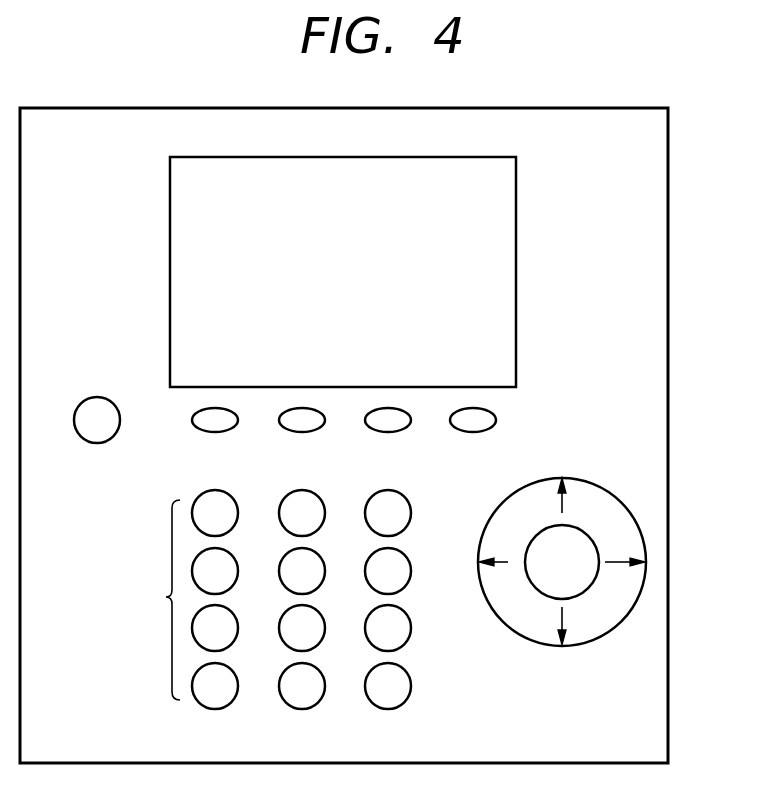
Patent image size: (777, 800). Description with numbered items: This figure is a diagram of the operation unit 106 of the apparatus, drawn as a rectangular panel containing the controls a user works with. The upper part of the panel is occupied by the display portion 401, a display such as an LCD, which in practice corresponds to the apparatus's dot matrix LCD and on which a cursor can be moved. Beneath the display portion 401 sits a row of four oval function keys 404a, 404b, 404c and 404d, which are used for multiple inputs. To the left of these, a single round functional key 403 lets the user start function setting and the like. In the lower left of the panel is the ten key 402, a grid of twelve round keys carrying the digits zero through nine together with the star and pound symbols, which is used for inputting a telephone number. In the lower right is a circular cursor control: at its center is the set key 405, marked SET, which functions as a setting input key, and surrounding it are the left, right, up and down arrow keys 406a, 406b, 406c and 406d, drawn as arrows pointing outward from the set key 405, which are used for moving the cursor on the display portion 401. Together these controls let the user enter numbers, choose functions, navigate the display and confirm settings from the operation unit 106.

The operation unit 106 is at (668, 302).
The display portion 401 is at (516, 265).
The ten key 402 is at (165, 597).
The functional key 403 is at (97, 397).
The function key 404a is at (228, 431).
The function key 404b is at (315, 431).
The function key 404c is at (400, 431).
The function key 404d is at (495, 424).
The set key 405 is at (593, 535).
The arrow key 406a is at (560, 508).
The arrow key 406b is at (617, 560).
The arrow key 406c is at (565, 615).
The arrow key 406d is at (505, 562).